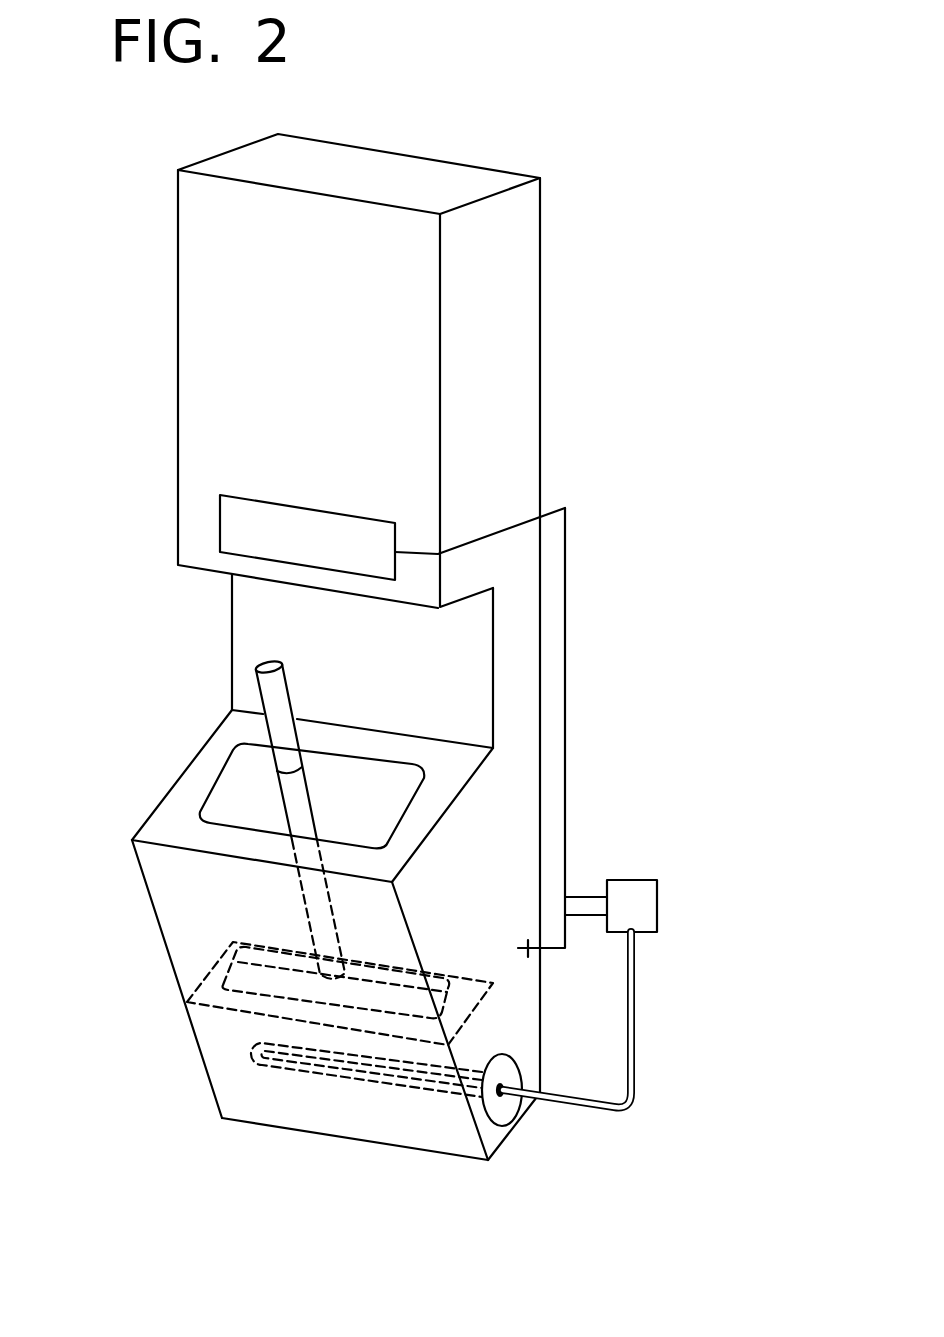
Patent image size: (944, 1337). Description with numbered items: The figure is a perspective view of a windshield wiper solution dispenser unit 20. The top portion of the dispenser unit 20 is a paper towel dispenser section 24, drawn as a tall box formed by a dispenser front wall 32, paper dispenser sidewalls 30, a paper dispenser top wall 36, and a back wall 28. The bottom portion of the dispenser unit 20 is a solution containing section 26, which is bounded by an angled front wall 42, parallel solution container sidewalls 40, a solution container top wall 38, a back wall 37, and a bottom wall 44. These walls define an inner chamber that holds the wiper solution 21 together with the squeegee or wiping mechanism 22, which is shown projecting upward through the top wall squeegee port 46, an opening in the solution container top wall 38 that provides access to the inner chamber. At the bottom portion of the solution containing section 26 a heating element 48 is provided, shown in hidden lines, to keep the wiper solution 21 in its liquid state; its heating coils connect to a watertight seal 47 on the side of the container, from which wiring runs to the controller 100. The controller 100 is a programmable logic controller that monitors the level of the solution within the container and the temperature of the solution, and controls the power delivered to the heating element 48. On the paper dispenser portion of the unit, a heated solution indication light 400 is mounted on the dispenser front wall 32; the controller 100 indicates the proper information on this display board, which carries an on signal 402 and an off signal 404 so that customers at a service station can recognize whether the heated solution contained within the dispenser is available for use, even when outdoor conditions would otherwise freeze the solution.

The dispenser unit 20 is at (426, 133).
The wiper solution 21 is at (187, 940).
The squeegee or wiping mechanism 22 is at (277, 728).
The paper towel dispenser section 24 is at (513, 310).
The solution containing section 26 is at (167, 908).
The back wall 28 is at (545, 257).
The paper dispenser sidewalls 30 is at (517, 375).
The dispenser front wall 32 is at (207, 405).
The paper dispenser top wall 36 is at (440, 180).
The back wall 37 is at (540, 830).
The solution container top wall 38 is at (172, 818).
The solution container sidewalls 40 is at (513, 870).
The angled front wall 42 is at (298, 1117).
The bottom wall 44 is at (362, 1145).
The top wall squeegee port 46 is at (228, 795).
The watertight seal 47 is at (502, 1113).
The heating element 48 is at (293, 1070).
The controller 100 is at (657, 904).
The heated solution indication light 400 is at (252, 578).
The on signal 402 is at (232, 542).
The off signal 404 is at (367, 562).